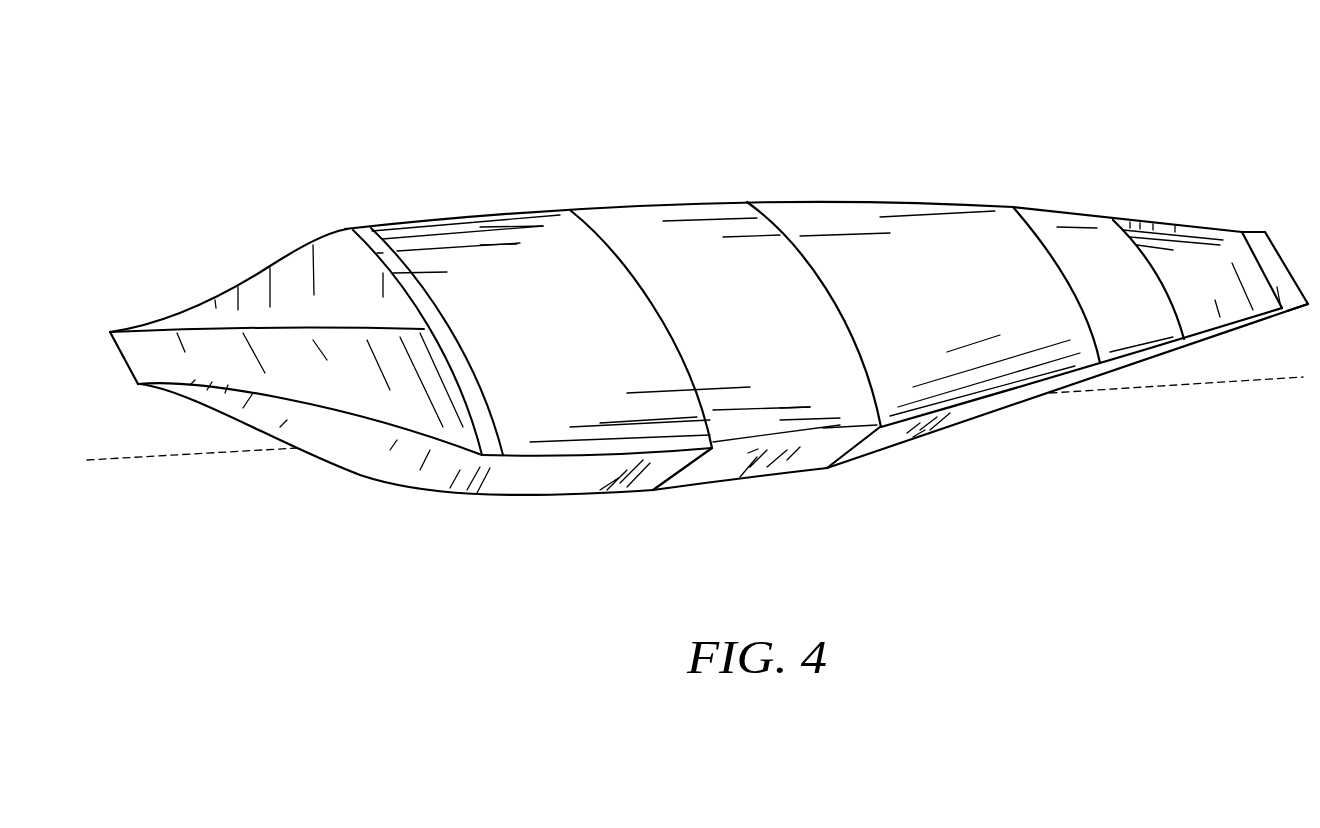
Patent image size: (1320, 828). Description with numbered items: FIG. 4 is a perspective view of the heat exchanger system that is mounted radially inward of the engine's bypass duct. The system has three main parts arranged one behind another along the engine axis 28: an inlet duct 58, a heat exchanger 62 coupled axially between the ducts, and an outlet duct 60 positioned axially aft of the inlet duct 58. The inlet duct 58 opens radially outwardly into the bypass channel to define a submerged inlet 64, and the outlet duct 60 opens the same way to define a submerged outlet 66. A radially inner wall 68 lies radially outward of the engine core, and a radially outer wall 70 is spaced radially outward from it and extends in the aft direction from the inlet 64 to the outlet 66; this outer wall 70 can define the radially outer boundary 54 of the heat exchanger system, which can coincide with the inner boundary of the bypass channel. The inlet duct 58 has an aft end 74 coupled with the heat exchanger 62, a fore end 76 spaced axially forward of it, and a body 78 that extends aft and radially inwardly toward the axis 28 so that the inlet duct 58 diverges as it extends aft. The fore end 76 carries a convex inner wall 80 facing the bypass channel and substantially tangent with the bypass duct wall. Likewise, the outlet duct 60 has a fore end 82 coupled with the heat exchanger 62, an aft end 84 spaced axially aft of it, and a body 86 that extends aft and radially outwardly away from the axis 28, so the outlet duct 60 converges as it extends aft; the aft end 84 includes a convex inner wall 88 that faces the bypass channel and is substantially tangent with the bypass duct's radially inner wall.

The axis 28 is at (133, 458).
The radially outer boundary 54 is at (487, 217).
The inlet duct 58 is at (292, 192).
The outlet duct 60 is at (1265, 164).
The heat exchanger 62 is at (701, 270).
The inlet 64 is at (341, 374).
The outlet 66 is at (1200, 310).
The radially inner wall 68 is at (729, 403).
The radially outer wall 70 is at (897, 272).
The aft end 74 is at (329, 275).
The fore end 76 is at (146, 308).
The body 78 is at (241, 311).
The convex inner wall 80 is at (165, 353).
The fore end 82 is at (1155, 218).
The aft end 84 is at (1230, 252).
The body 86 is at (1192, 253).
The convex inner wall 88 is at (1233, 272).